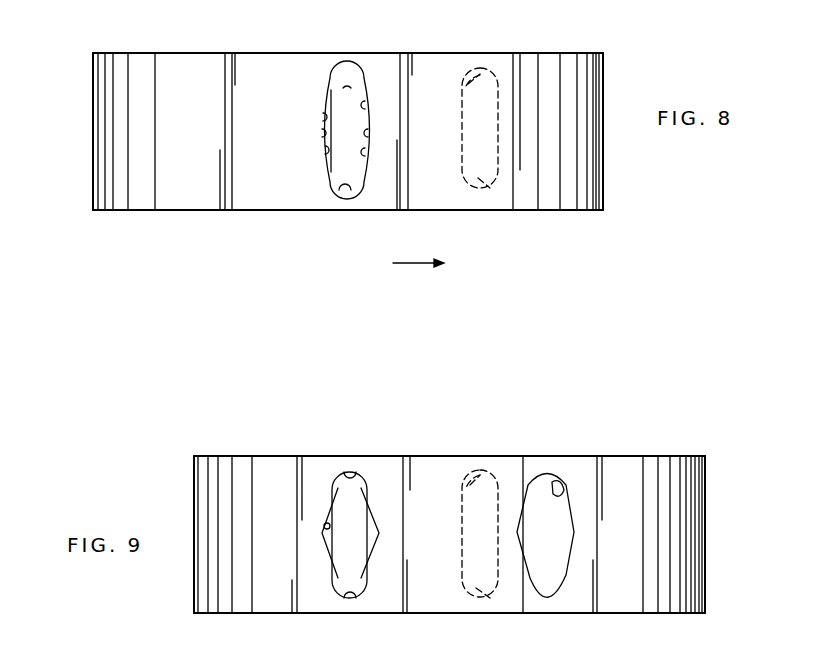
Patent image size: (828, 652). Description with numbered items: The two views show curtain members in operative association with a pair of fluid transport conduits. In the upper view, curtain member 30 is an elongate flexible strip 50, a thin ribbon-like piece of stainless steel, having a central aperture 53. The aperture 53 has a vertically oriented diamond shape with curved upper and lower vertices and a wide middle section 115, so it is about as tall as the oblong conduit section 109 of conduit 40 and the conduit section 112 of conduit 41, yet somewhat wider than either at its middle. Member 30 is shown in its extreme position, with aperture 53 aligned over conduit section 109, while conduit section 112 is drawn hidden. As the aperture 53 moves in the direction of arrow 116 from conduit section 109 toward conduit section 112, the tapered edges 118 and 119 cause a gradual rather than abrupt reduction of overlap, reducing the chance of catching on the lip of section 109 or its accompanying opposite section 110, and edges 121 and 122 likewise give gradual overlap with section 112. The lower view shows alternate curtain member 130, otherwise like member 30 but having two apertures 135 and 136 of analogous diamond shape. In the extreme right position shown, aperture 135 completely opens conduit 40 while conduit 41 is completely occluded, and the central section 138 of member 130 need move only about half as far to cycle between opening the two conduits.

In FIG. 8, the curtain member 30 is at (202, 54).
In FIG. 8, the elongate flexible strip 50 is at (387, 53).
In FIG. 8, the conduit 40 is at (346, 196).
In FIG. 9, the conduit 40 is at (347, 596).
In FIG. 8, the conduit 41 is at (490, 190).
In FIG. 9, the conduit 41 is at (487, 597).
In FIG. 8, the conduit section 109 is at (343, 88).
In FIG. 9, the conduit section 109 is at (350, 478).
In FIG. 8, the conduit section 112 is at (484, 80).
In FIG. 8, the edge of aperture 118 is at (323, 116).
In FIG. 8, the middle section of aperture 115 is at (322, 133).
In FIG. 8, the edge of aperture 119 is at (326, 150).
In FIG. 8, the edge of aperture 121 is at (362, 106).
In FIG. 8, the central aperture 53 is at (367, 134).
In FIG. 8, the edge of aperture 122 is at (362, 152).
In FIG. 8, the arrow 116 is at (410, 265).
In FIG. 9, the alternate curtain member 130 is at (415, 457).
In FIG. 9, the central section 138 is at (458, 613).
In FIG. 9, the conduit section 110 is at (488, 472).
In FIG. 9, the aperture 135 is at (326, 527).
In FIG. 9, the aperture 136 is at (556, 482).